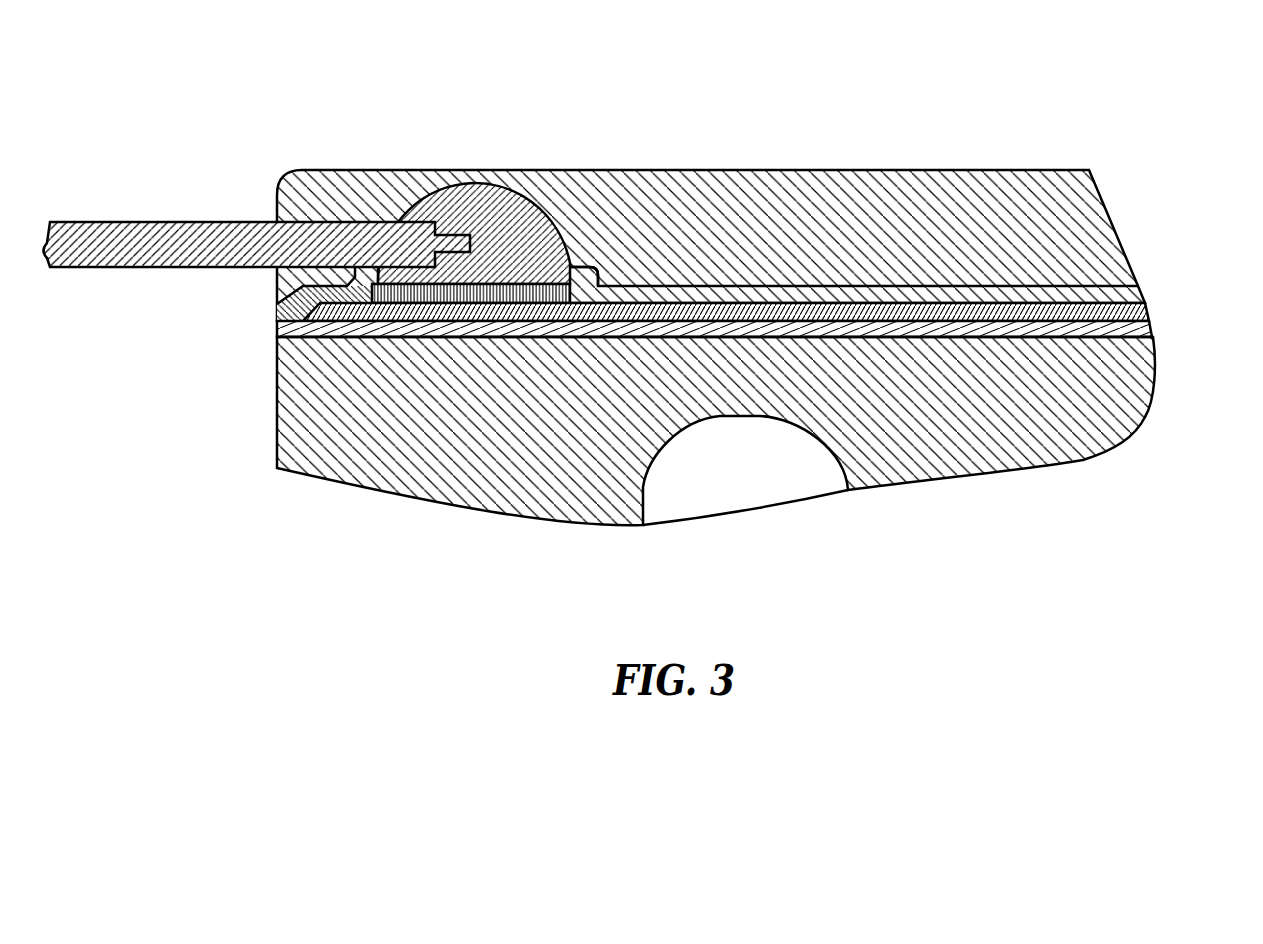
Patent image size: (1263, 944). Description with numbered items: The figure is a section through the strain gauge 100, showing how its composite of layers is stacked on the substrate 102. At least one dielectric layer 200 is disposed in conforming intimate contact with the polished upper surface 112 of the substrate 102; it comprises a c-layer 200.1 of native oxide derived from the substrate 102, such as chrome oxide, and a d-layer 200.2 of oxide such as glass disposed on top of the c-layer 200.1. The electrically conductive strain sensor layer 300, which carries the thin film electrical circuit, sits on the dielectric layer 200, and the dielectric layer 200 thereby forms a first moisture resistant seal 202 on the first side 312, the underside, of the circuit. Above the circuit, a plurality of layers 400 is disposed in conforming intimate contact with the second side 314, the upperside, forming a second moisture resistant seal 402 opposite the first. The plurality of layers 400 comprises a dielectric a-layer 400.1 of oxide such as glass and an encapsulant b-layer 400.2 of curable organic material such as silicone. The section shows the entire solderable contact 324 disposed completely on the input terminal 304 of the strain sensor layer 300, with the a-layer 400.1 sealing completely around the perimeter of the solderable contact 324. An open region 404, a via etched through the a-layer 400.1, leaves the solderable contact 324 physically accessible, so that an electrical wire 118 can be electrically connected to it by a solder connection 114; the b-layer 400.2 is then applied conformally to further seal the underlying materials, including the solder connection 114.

The strain gauge 100 is at (1036, 30).
The substrate 102 is at (320, 430).
The upper surface of the substrate 112 is at (323, 340).
The solder connection 114 is at (462, 203).
The electrical wire 118 is at (107, 222).
The dielectric layer 200 is at (627, 323).
The c-layer 200.1 is at (953, 335).
The d-layer 200.2 is at (865, 335).
The first moisture resistant seal 202 is at (1168, 324).
The strain sensor layer 300 is at (777, 318).
The input terminal 304 is at (527, 253).
The first side of the electrical circuit 312 is at (1103, 340).
The second side of the electrical circuit 314 is at (1020, 300).
The solderable contact 324 is at (497, 297).
The plurality of layers 400 is at (1092, 168).
The a-layer 400.1 is at (697, 293).
The b-layer 400.2 is at (333, 188).
The second moisture resistant seal 402 is at (1172, 305).
The open region 404 is at (583, 249).